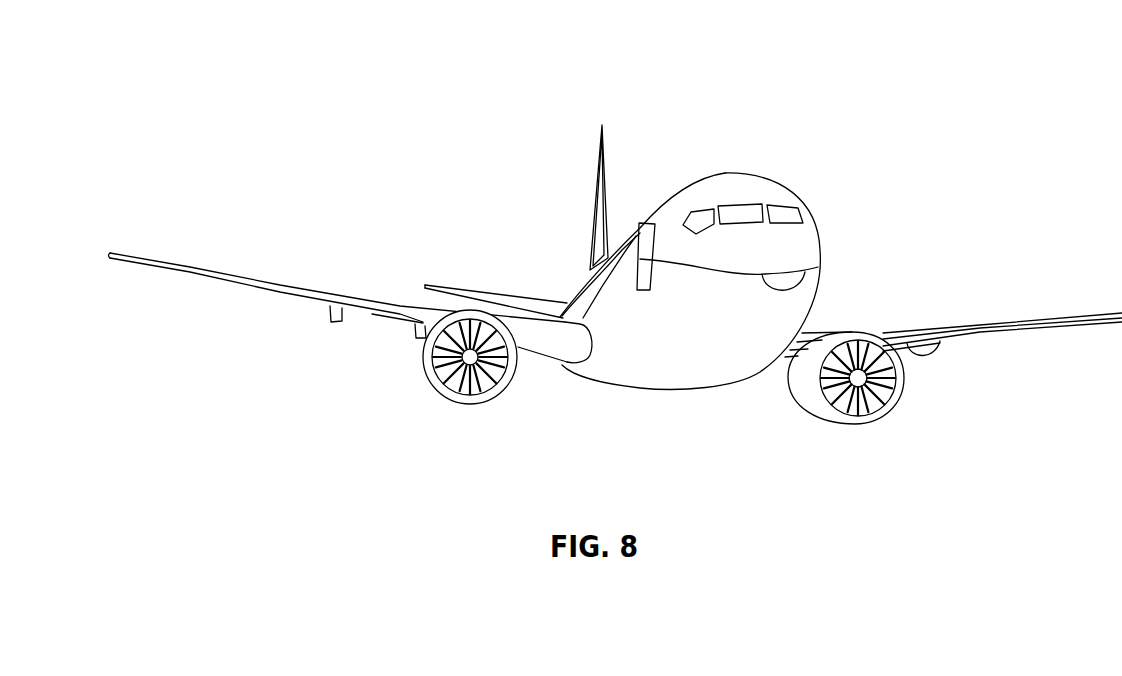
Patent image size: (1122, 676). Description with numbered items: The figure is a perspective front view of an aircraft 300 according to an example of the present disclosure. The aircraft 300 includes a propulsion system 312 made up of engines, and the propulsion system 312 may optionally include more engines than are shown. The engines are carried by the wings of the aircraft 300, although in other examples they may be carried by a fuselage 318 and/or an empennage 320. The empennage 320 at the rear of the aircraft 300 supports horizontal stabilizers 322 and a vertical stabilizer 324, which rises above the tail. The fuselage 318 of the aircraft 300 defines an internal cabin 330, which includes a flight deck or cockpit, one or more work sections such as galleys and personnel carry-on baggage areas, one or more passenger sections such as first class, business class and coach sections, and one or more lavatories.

The aircraft 300 is at (363, 68).
The propulsion system 312 is at (388, 415).
The fuselage 318 is at (817, 238).
The empennage 320 is at (588, 267).
The horizontal stabilizers 322 is at (462, 288).
The vertical stabilizer 324 is at (600, 165).
The internal cabin 330 is at (745, 207).